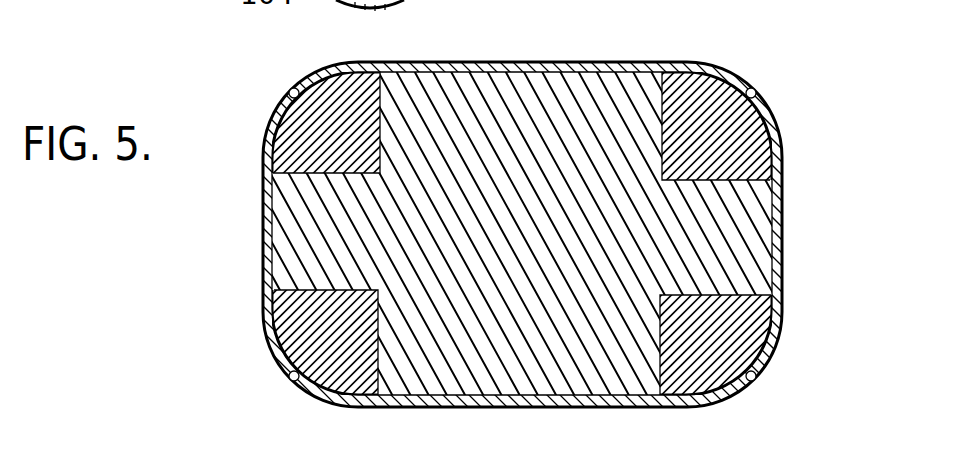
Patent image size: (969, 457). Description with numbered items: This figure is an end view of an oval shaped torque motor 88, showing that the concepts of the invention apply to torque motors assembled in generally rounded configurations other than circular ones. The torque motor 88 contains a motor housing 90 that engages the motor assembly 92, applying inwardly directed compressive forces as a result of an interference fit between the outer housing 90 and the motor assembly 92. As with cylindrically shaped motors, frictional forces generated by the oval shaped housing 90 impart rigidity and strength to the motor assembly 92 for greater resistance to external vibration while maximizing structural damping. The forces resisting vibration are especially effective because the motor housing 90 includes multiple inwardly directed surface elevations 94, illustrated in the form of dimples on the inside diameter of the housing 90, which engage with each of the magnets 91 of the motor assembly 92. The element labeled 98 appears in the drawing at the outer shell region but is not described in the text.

The torque motor 88 is at (255, 258).
The motor housing 90 is at (265, 298).
The magnets 91 is at (697, 97).
The motor assembly 92 is at (545, 95).
The inwardly directed surface elevations 94 is at (300, 92).
The outer shell 98 is at (505, 62).